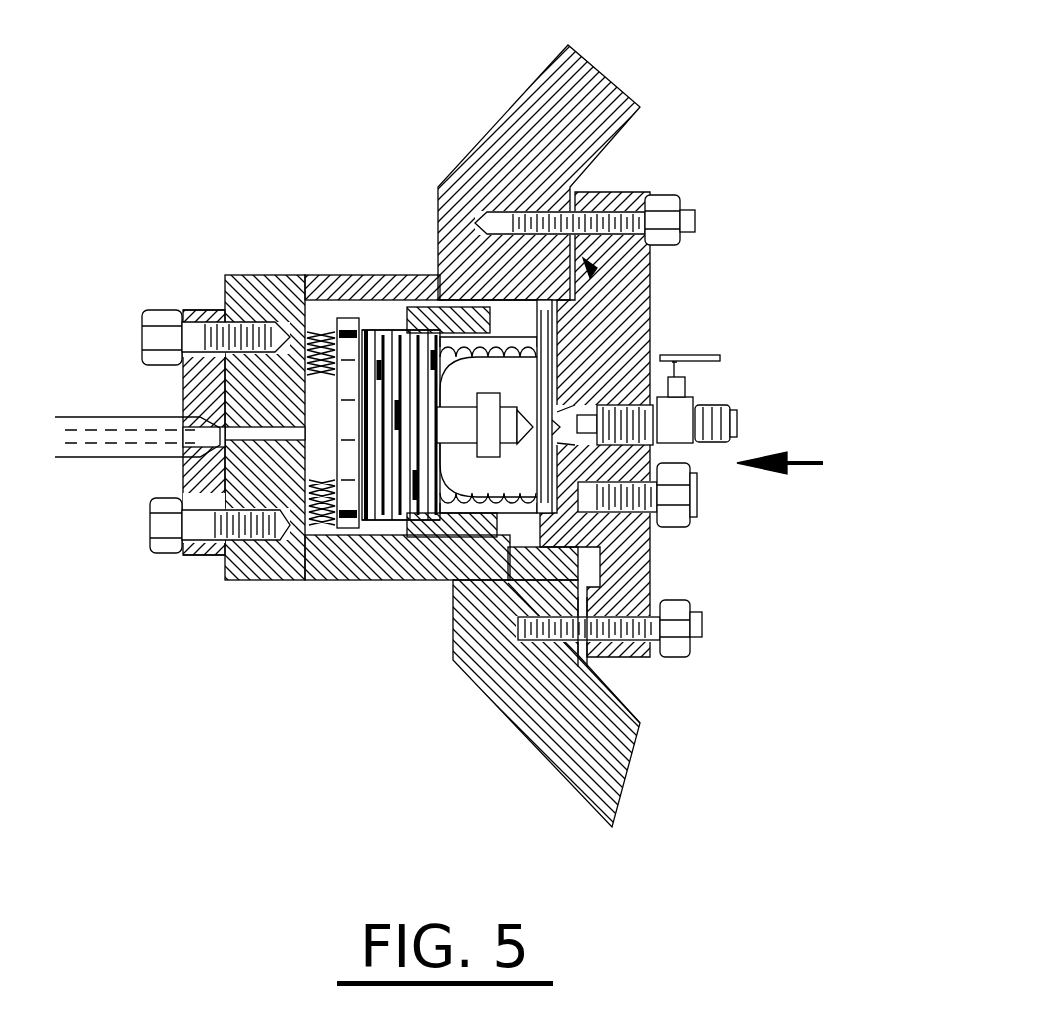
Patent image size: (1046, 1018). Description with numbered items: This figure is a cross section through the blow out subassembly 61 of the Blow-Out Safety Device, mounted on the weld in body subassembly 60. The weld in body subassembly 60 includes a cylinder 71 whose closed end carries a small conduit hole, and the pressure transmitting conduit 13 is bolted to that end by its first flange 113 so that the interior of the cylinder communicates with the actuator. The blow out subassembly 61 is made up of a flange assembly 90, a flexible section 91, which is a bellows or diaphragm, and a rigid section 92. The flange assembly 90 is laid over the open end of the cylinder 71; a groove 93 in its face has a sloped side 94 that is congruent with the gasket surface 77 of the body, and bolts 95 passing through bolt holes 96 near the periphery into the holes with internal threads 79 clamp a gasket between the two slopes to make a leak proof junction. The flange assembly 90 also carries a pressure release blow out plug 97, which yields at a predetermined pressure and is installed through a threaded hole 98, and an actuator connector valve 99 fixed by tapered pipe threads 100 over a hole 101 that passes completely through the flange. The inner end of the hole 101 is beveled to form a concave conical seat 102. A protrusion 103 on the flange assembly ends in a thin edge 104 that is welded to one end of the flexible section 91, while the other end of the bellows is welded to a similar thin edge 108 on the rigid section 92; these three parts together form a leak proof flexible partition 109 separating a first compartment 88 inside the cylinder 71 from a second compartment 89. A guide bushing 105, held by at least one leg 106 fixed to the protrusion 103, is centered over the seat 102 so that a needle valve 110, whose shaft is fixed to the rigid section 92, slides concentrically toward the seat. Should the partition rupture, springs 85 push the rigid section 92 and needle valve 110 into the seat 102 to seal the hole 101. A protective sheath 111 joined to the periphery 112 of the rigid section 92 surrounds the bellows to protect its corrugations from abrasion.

The pressure transmitting conduit 13 is at (105, 417).
The weld in body subassembly 60 is at (452, 170).
The blow out subassembly 61 is at (805, 466).
The cylinder 71 is at (322, 315).
The gasket surface 77 is at (632, 752).
The holes with internal threads 79 is at (640, 725).
The springs 85 is at (323, 472).
The first compartment 88 is at (330, 300).
The second compartment 89 is at (505, 530).
The flange assembly 90 is at (593, 265).
The flexible section 91 is at (397, 337).
The rigid section 92 is at (368, 335).
The groove 93 is at (603, 557).
The sloped side 94 is at (660, 587).
The bolts 95 is at (627, 640).
The bolt holes 96 is at (640, 672).
The pressure release blow out plug 97 is at (700, 493).
The hole 98 is at (592, 518).
The actuator connector valve 99 is at (672, 423).
The tapered pipe threads 100 is at (688, 388).
The hole 101 is at (592, 432).
The concave conical seat 102 is at (560, 415).
The protrusion 103 is at (575, 365).
The thin edge 104 is at (600, 290).
The guide bushing 105 is at (440, 455).
The leg 106 is at (512, 438).
The thin edge 108 is at (375, 493).
The flexible partition 109 is at (400, 497).
The needle valve 110 is at (483, 443).
The protective sheath 111 is at (345, 535).
The periphery 112 is at (310, 548).
The first flange 113 is at (200, 307).